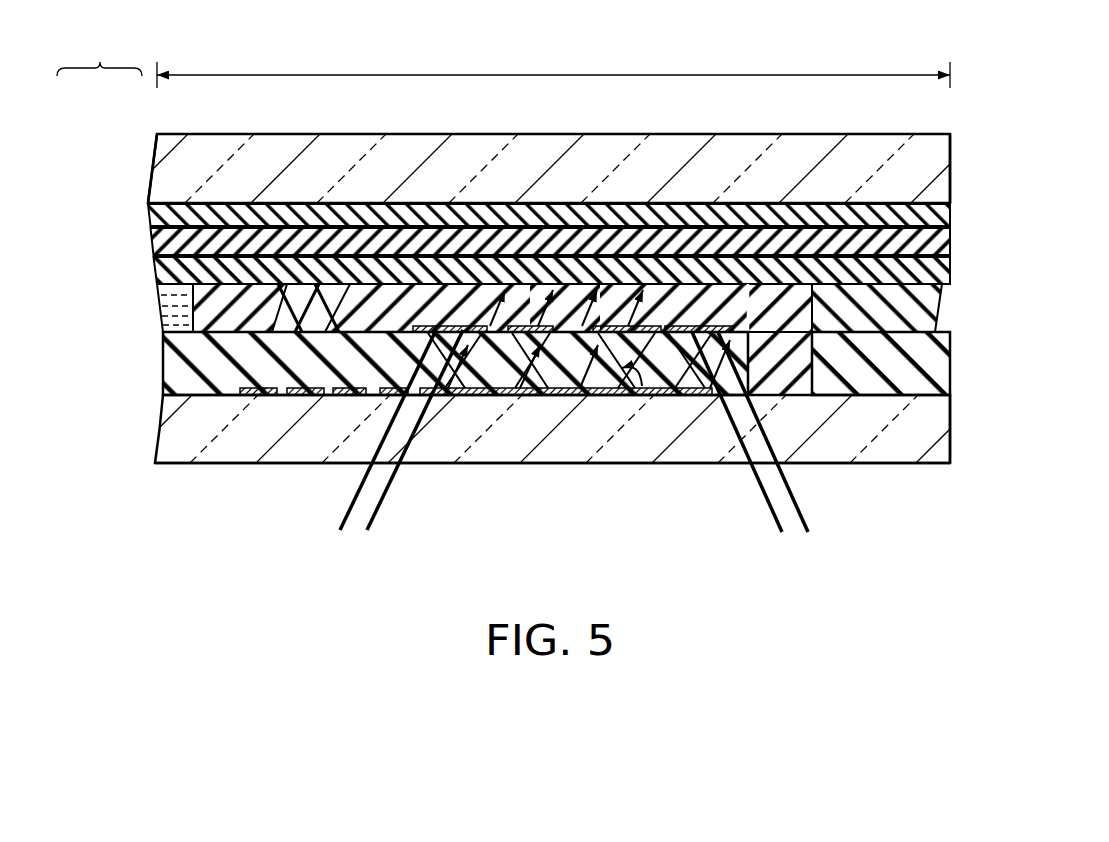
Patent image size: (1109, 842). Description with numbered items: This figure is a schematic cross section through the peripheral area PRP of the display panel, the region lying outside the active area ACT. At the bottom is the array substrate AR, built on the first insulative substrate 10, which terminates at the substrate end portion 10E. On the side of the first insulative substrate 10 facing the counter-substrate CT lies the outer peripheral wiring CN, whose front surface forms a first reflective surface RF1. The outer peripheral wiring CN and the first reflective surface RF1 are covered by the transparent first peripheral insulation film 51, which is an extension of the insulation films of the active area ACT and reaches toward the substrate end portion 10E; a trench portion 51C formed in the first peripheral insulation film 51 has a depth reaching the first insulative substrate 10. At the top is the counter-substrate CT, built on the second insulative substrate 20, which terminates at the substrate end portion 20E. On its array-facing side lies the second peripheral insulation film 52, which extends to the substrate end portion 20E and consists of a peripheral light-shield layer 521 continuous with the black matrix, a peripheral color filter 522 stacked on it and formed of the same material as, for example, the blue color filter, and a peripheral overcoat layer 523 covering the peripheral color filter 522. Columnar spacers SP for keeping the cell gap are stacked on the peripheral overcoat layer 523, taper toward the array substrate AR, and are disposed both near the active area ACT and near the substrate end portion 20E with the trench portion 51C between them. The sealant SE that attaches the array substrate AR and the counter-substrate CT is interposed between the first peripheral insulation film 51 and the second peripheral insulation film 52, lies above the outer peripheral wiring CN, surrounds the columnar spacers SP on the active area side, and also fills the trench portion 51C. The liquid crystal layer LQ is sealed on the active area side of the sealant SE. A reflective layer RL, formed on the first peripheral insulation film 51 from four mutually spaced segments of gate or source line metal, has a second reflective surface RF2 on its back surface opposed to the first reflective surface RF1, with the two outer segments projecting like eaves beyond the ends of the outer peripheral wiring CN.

The second insulative substrate 20 is at (233, 150).
The substrate end portion 20E is at (955, 169).
The second peripheral insulation film 52 is at (612, 245).
The peripheral light-shield layer 521 is at (953, 212).
The peripheral color filter 522 is at (953, 241).
The peripheral overcoat layer 523 is at (953, 268).
The liquid crystal layer LQ is at (156, 303).
The trench portion 51C is at (773, 358).
The sealant SE is at (698, 323).
The columnar spacers SP is at (292, 300).
The first peripheral insulation film 51 is at (233, 378).
The first insulative substrate 10 is at (191, 463).
The substrate end portion 10E is at (955, 430).
The array substrate AR is at (163, 467).
The reflective layer RL is at (447, 320).
The outer peripheral wiring CN is at (560, 397).
The first reflective surface RF1 is at (640, 400).
The second reflective surface RF2 is at (486, 398).
The peripheral area PRP is at (553, 68).
The active area ACT is at (99, 54).
The counter-substrate CT is at (147, 146).